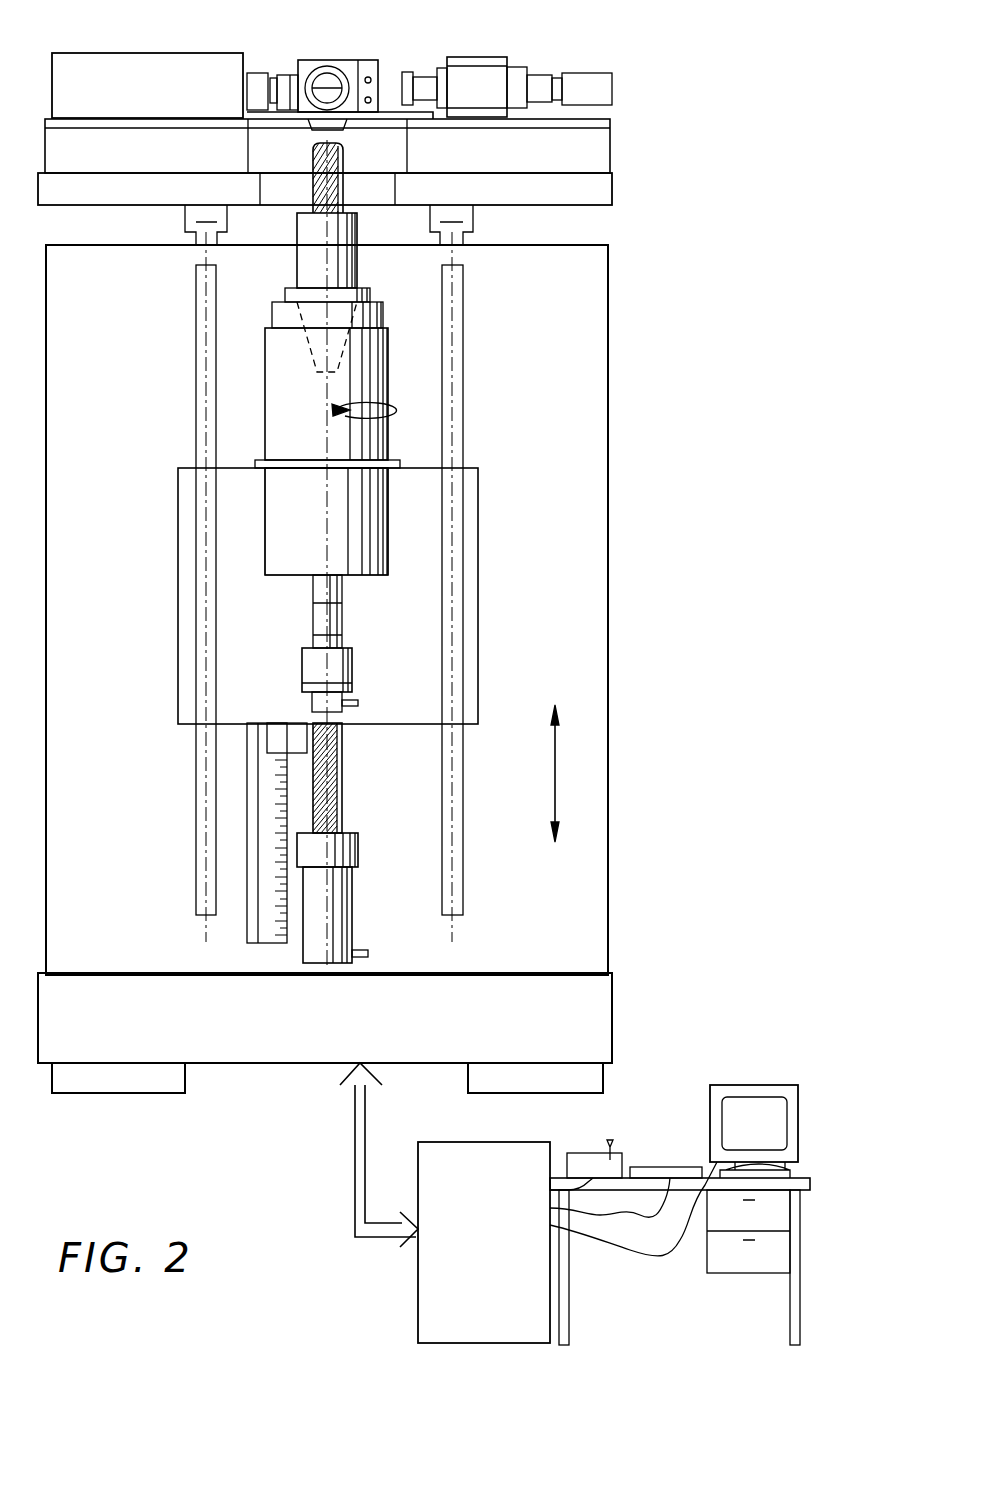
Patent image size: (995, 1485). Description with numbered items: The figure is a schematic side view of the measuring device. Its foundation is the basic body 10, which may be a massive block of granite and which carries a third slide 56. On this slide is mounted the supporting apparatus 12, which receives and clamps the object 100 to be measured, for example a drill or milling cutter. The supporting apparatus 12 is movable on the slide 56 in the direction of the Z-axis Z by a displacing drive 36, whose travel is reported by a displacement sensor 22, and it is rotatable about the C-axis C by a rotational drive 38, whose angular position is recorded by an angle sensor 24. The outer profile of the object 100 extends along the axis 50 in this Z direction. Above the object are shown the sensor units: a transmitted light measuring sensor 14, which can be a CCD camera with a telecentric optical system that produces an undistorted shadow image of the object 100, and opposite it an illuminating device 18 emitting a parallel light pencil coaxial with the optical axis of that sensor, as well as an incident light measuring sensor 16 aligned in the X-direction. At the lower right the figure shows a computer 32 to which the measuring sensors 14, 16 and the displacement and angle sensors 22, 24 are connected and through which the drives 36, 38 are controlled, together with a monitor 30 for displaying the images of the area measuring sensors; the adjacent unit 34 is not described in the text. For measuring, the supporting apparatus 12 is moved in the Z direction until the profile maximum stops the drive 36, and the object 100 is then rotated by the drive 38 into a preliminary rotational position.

The basic body 10 is at (595, 280).
The supporting apparatus 12 is at (343, 230).
The transmitted light measuring sensor 14 is at (612, 88).
The incident light measuring sensor 16 is at (330, 58).
The illuminating device 18 is at (157, 68).
The displacement sensor 22 is at (273, 738).
The angle sensor 24 is at (337, 407).
The monitor 30 is at (440, 1290).
The computer 32 is at (750, 1085).
The keyboard 34 is at (657, 1167).
The displacing drive 36 is at (345, 900).
The rotational drive 38 is at (352, 665).
The axis 50 is at (327, 535).
The third slide 56 is at (465, 566).
The object to be measured 100 is at (340, 155).
The C-axis C is at (327, 503).
The Z-axis Z is at (556, 762).